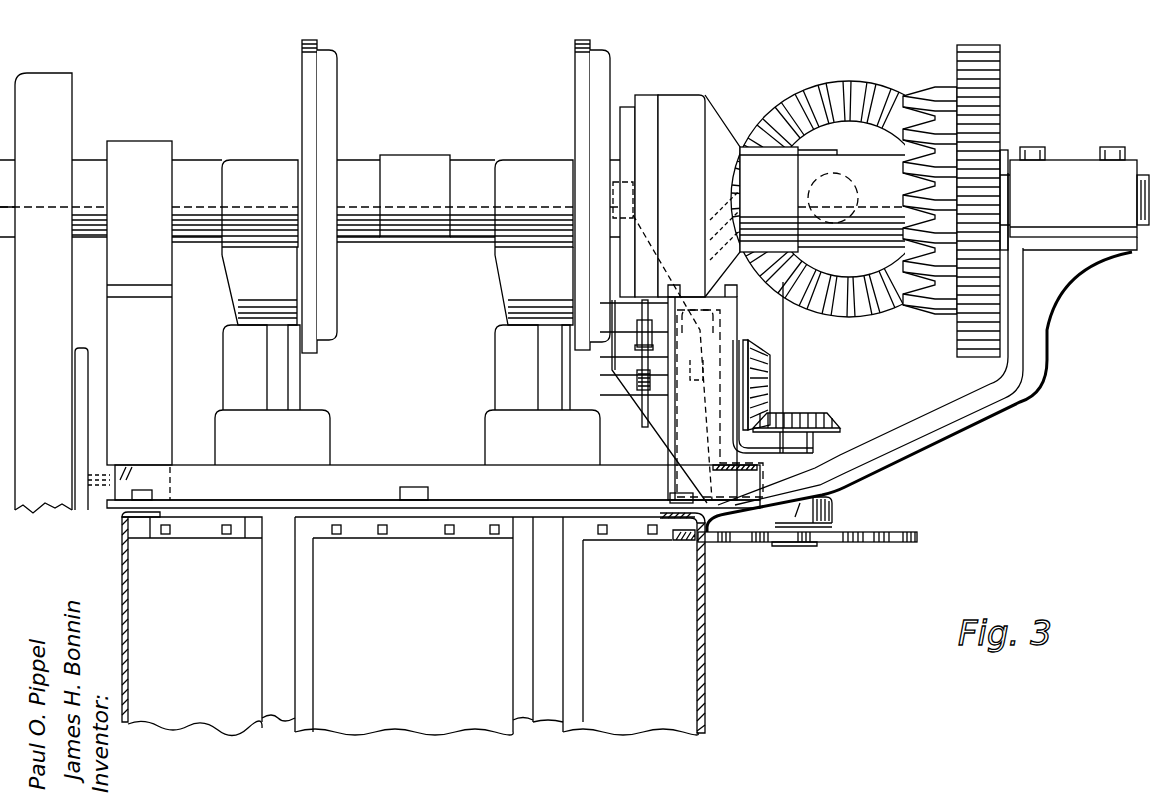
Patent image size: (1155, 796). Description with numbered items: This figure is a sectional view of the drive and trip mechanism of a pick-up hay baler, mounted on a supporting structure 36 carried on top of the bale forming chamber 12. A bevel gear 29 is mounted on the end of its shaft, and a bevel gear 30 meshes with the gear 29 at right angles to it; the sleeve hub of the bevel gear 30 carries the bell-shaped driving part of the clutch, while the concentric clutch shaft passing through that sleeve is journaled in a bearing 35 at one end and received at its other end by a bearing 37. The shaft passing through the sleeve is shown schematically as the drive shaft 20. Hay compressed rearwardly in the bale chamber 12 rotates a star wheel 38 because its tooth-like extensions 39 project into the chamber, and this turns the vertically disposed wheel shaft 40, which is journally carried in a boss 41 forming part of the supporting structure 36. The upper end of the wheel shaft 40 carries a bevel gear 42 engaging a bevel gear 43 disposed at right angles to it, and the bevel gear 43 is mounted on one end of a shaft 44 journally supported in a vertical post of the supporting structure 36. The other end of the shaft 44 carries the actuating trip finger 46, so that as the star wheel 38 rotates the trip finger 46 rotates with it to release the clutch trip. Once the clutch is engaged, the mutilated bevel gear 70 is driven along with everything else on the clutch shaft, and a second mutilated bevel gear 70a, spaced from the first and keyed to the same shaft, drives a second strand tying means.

The bale forming chamber 12 is at (705, 650).
The drive shaft 20 is at (828, 173).
The bevel gear 29 is at (853, 100).
The bevel gear 30 is at (945, 90).
The bearing 35 is at (1075, 168).
The supporting structure 36 is at (963, 424).
The bearing 37 is at (75, 160).
The star wheel 38 is at (765, 545).
The tooth-like extensions 39 is at (680, 542).
The wheel shaft 40 is at (823, 547).
The boss 41 is at (845, 498).
The bevel gear 42 is at (830, 416).
The bevel gear 43 is at (790, 388).
The shaft 44 is at (745, 325).
The actuating trip finger 46 is at (642, 418).
The mutilated bevel gear 70 is at (605, 48).
The second mutilated bevel gear 70a is at (325, 46).